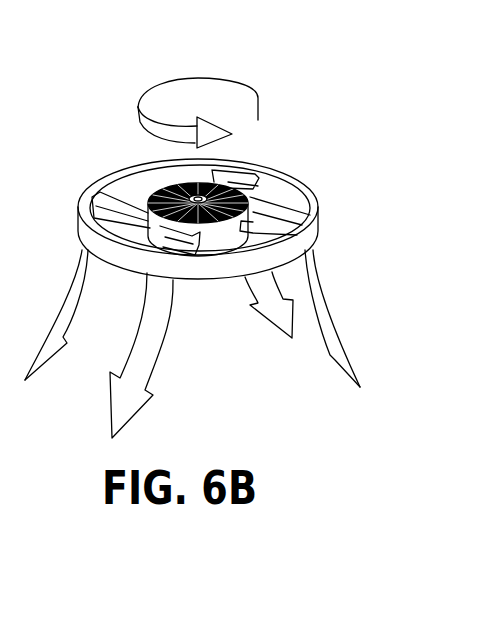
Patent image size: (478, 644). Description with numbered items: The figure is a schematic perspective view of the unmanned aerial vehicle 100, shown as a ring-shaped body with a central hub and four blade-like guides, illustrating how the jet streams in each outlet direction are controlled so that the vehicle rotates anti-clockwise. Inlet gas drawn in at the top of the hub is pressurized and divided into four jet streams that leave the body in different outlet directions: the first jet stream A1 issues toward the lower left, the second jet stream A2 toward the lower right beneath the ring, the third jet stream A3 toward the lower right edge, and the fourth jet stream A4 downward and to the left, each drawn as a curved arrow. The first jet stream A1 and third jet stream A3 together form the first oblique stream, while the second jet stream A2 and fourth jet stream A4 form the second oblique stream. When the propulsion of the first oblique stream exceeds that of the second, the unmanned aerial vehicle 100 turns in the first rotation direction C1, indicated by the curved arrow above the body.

The unmanned aerial vehicle 100 is at (97, 178).
The first rotation direction C1 is at (200, 78).
The first jet stream A1 is at (56, 318).
The second jet stream A2 is at (268, 310).
The third jet stream A3 is at (332, 325).
The fourth jet stream A4 is at (141, 356).